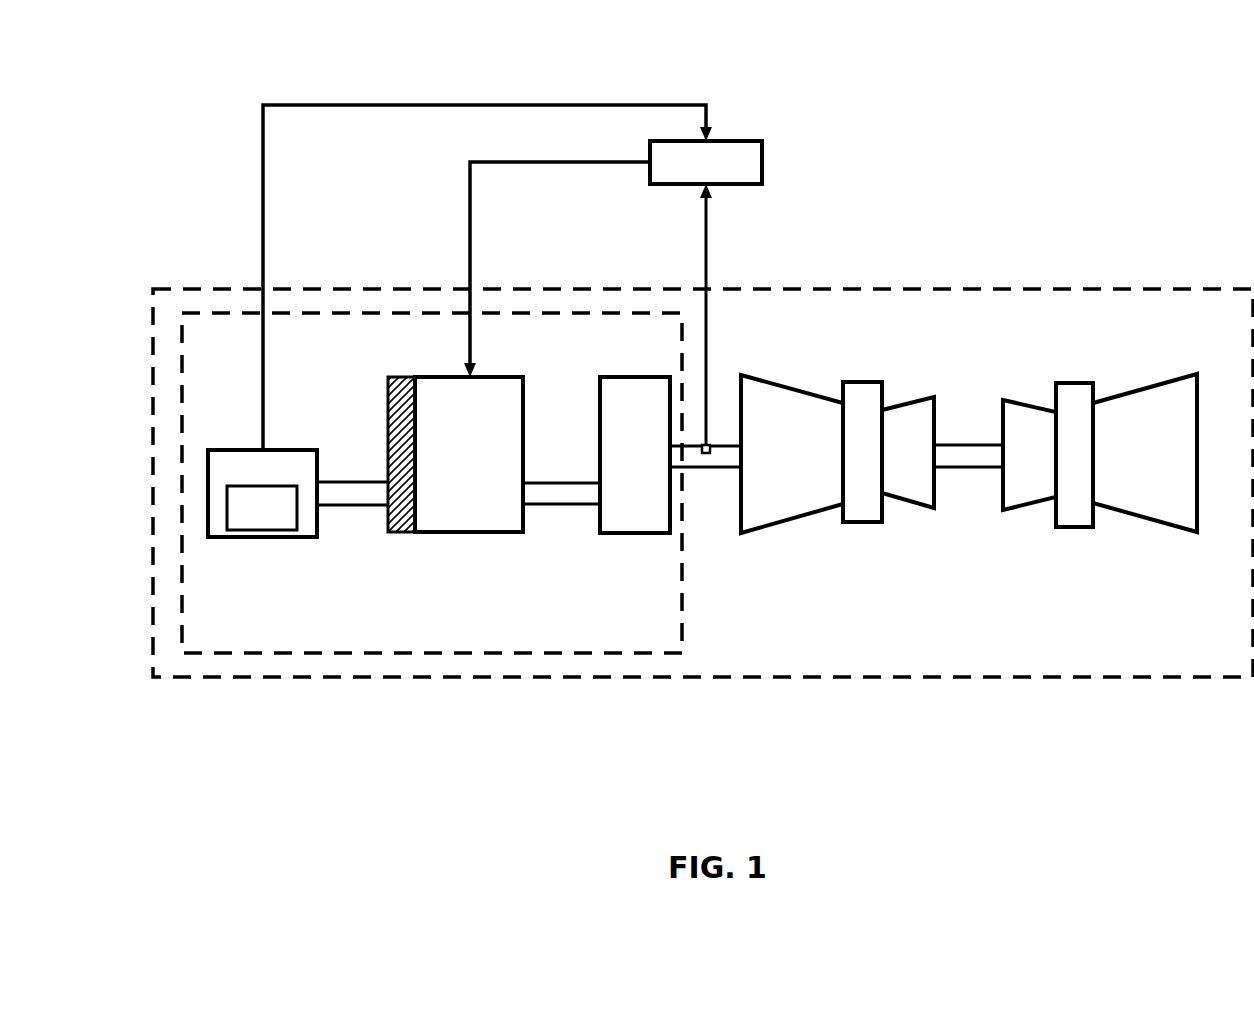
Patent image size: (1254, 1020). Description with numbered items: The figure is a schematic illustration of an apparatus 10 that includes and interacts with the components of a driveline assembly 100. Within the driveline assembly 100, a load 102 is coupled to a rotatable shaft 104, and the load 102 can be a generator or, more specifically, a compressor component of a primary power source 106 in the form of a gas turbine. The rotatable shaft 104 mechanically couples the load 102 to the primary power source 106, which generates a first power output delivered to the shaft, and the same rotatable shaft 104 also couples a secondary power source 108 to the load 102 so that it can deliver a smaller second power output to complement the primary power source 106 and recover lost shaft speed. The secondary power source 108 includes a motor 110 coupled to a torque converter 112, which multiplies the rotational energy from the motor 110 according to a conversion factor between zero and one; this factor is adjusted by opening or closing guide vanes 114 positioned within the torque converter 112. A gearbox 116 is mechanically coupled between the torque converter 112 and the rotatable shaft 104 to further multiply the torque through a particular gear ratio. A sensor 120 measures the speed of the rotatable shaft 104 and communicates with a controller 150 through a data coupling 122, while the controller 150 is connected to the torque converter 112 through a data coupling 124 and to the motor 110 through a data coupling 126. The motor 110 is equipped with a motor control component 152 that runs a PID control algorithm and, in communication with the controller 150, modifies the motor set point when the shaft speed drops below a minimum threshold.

The apparatus 10 is at (1050, 188).
The driveline assembly 100 is at (202, 288).
The load 102 is at (837, 454).
The rotatable shaft 104 is at (697, 470).
The primary power source 106 is at (1100, 453).
The secondary power source 108 is at (682, 607).
The motor 110 is at (262, 493).
The torque converter 112 is at (470, 533).
The guide vanes 114 is at (400, 497).
The gearbox 116 is at (670, 455).
The sensor 120 is at (709, 446).
The data coupling 122 is at (707, 257).
The data coupling 124 is at (536, 167).
The data coupling 126 is at (350, 103).
The controller 150 is at (706, 162).
The motor control component 152 is at (262, 508).